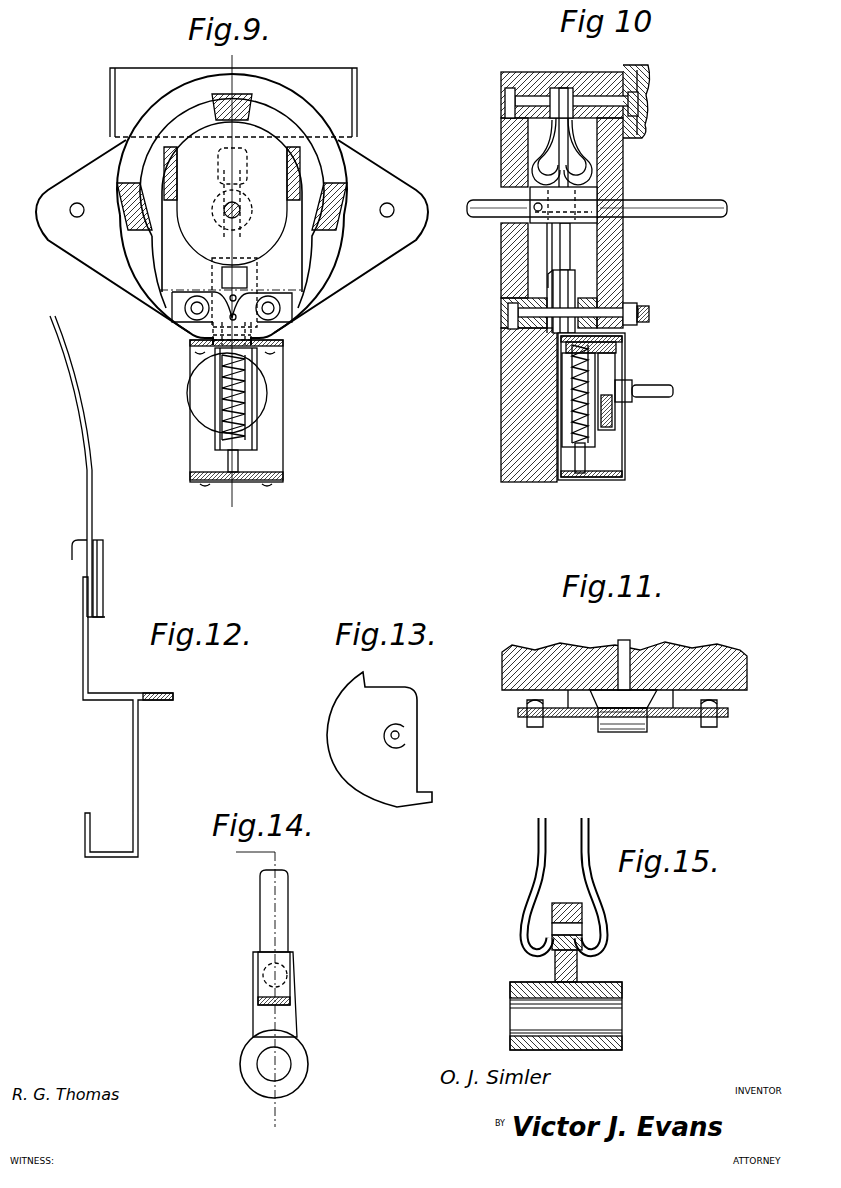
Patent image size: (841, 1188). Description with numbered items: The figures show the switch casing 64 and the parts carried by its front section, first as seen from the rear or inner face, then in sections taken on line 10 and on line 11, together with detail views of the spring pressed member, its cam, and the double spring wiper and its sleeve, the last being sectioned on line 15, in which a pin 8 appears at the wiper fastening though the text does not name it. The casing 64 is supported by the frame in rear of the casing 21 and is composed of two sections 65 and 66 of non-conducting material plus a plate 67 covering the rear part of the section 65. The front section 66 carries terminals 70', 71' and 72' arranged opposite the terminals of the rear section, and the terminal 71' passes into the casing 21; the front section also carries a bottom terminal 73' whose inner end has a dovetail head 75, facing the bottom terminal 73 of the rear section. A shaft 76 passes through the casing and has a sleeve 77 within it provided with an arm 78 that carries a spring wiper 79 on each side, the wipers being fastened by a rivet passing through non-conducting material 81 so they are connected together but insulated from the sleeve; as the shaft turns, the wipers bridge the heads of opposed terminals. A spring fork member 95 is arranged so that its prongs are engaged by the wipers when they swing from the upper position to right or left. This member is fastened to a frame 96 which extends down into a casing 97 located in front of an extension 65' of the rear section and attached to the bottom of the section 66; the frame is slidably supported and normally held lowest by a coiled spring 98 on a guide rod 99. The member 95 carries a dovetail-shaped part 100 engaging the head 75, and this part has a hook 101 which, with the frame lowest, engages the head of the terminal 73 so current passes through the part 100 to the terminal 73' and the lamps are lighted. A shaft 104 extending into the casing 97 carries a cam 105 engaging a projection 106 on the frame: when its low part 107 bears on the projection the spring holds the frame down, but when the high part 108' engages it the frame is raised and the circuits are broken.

In FIG. 15, the pin 8 is at (566, 903).
In FIG. 9, the section line 10 is at (234, 281).
In FIG. 9, the section line 11 is at (234, 299).
In FIG. 14, the section line 15 is at (241, 998).
In FIG. 9, the casing 21 is at (143, 82).
In FIG. 10, the casing 21 is at (640, 90).
In FIG. 10, the switch casing 64 is at (550, 87).
In FIG. 10, the rear section 65 is at (562, 81).
In FIG. 10, the extension of the rear section 65' is at (528, 427).
In FIG. 10, the front section 66 is at (590, 72).
In FIG. 11, the front section 66 is at (732, 646).
In FIG. 10, the plate 67 is at (501, 163).
In FIG. 9, the terminal 70' is at (124, 188).
In FIG. 9, the terminal 71' is at (249, 108).
In FIG. 10, the terminal 71' is at (651, 153).
In FIG. 9, the terminal 72' is at (339, 188).
In FIG. 10, the bottom terminal 73 is at (557, 324).
In FIG. 10, the bottom terminal 73' is at (587, 301).
In FIG. 11, the bottom terminal 73' is at (601, 651).
In FIG. 10, the dovetail head 75 is at (620, 270).
In FIG. 11, the dovetail head 75 is at (672, 646).
In FIG. 10, the shaft 76 is at (688, 200).
In FIG. 10, the sleeve 77 is at (600, 197).
In FIG. 14, the sleeve 77 is at (298, 1053).
In FIG. 15, the sleeve 77 is at (622, 985).
In FIG. 10, the arm 78 is at (585, 172).
In FIG. 14, the arm 78 is at (290, 1012).
In FIG. 15, the arm 78 is at (555, 962).
In FIG. 10, the spring wiper 79 is at (543, 140).
In FIG. 14, the spring wiper 79 is at (282, 910).
In FIG. 15, the spring wiper 79 is at (538, 880).
In FIG. 15, the non-conducting material 81 is at (577, 962).
In FIG. 9, the spring fork member 95 is at (290, 212).
In FIG. 10, the spring fork member 95 is at (560, 237).
In FIG. 9, the frame 96 is at (240, 330).
In FIG. 10, the frame 96 is at (555, 343).
In FIG. 12, the frame 96 is at (88, 680).
In FIG. 10, the casing 97 is at (625, 460).
In FIG. 9, the coiled spring 98 is at (243, 377).
In FIG. 10, the coiled spring 98 is at (585, 385).
In FIG. 9, the guide rod 99 is at (243, 458).
In FIG. 10, the guide rod 99 is at (585, 458).
In FIG. 11, the part 100 is at (622, 700).
In FIG. 12, the part 100 is at (100, 568).
In FIG. 9, the hook 101 is at (232, 267).
In FIG. 10, the hook 101 is at (553, 283).
In FIG. 11, the hook 101 is at (635, 735).
In FIG. 12, the hook 101 is at (72, 552).
In FIG. 10, the shaft 104 is at (672, 390).
In FIG. 9, the cam 105 is at (202, 407).
In FIG. 10, the cam 105 is at (615, 415).
In FIG. 13, the cam 105 is at (330, 757).
In FIG. 10, the projection 106 is at (620, 352).
In FIG. 12, the projection 106 is at (175, 698).
In FIG. 9, the low part 107 is at (263, 403).
In FIG. 10, the low part 107 is at (578, 400).
In FIG. 13, the low part 107 is at (418, 766).
In FIG. 13, the high part 108' is at (415, 673).